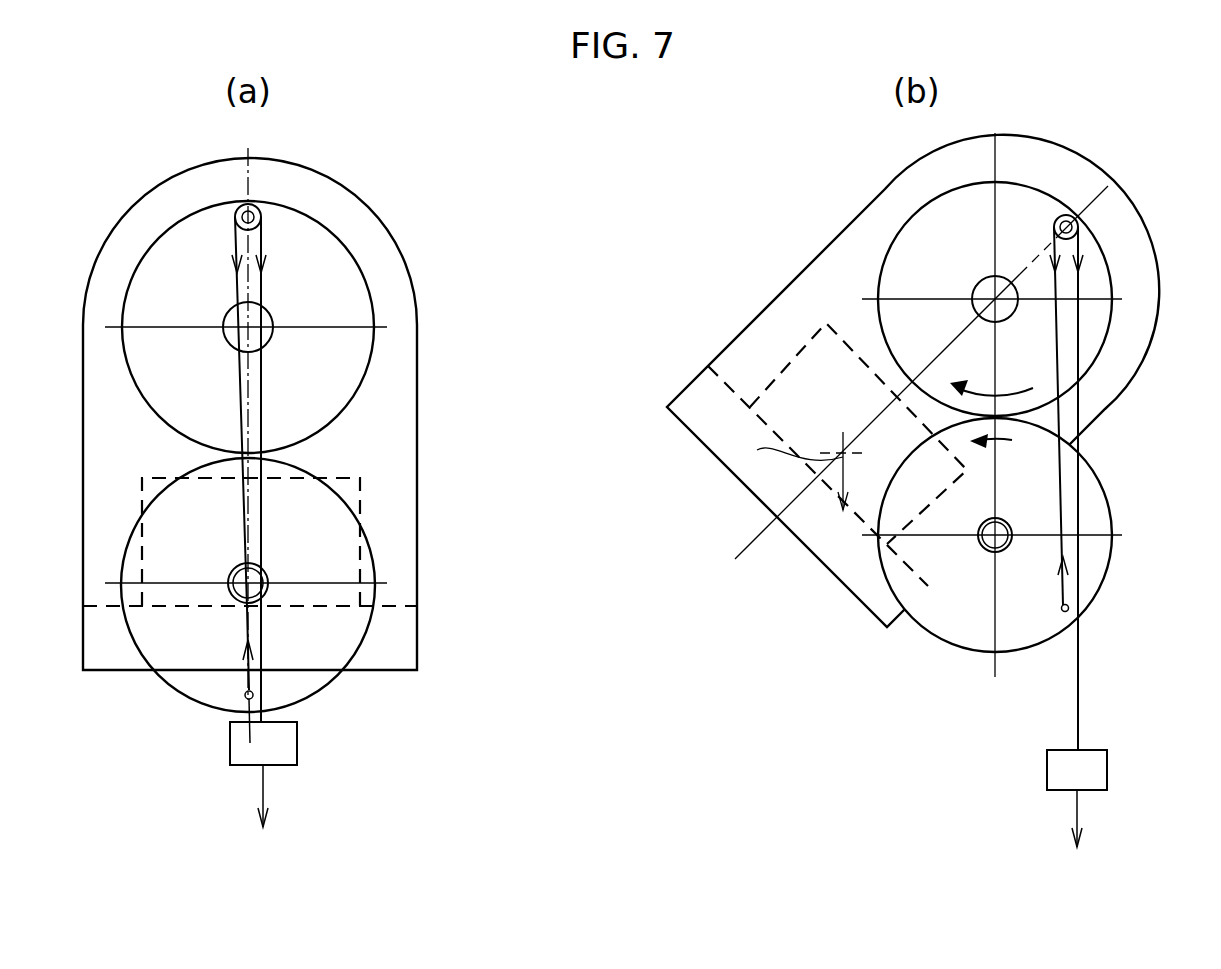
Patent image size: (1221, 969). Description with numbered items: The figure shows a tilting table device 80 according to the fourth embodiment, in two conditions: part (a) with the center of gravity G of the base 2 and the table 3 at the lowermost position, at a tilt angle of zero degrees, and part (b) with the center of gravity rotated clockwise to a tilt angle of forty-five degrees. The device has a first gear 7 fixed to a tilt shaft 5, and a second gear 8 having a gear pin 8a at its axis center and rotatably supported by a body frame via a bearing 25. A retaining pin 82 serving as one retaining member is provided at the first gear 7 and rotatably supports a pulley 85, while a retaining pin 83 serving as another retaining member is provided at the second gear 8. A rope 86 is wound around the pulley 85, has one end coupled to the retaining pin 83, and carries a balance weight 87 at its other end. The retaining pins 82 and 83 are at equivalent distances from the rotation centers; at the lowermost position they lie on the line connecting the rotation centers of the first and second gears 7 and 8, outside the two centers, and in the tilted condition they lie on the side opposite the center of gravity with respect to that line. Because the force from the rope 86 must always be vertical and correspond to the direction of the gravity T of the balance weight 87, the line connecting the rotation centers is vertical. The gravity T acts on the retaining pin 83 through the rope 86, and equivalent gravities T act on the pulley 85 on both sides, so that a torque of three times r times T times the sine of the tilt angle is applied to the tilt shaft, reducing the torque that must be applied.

The tilting table device 80 is at (764, 228).
The base 2 is at (755, 320).
The table 3 is at (826, 323).
The tilt shaft 5 is at (982, 278).
The first gear 7 is at (1117, 304).
The second gear 8 is at (1103, 487).
The gear pin 8a is at (987, 553).
The bearing 25 is at (1005, 555).
The retaining pin 82 is at (1078, 218).
The retaining pin 83 is at (1072, 607).
The pulley 85 is at (1073, 208).
The rope 86 is at (1078, 660).
The balance weight 87 is at (1107, 770).